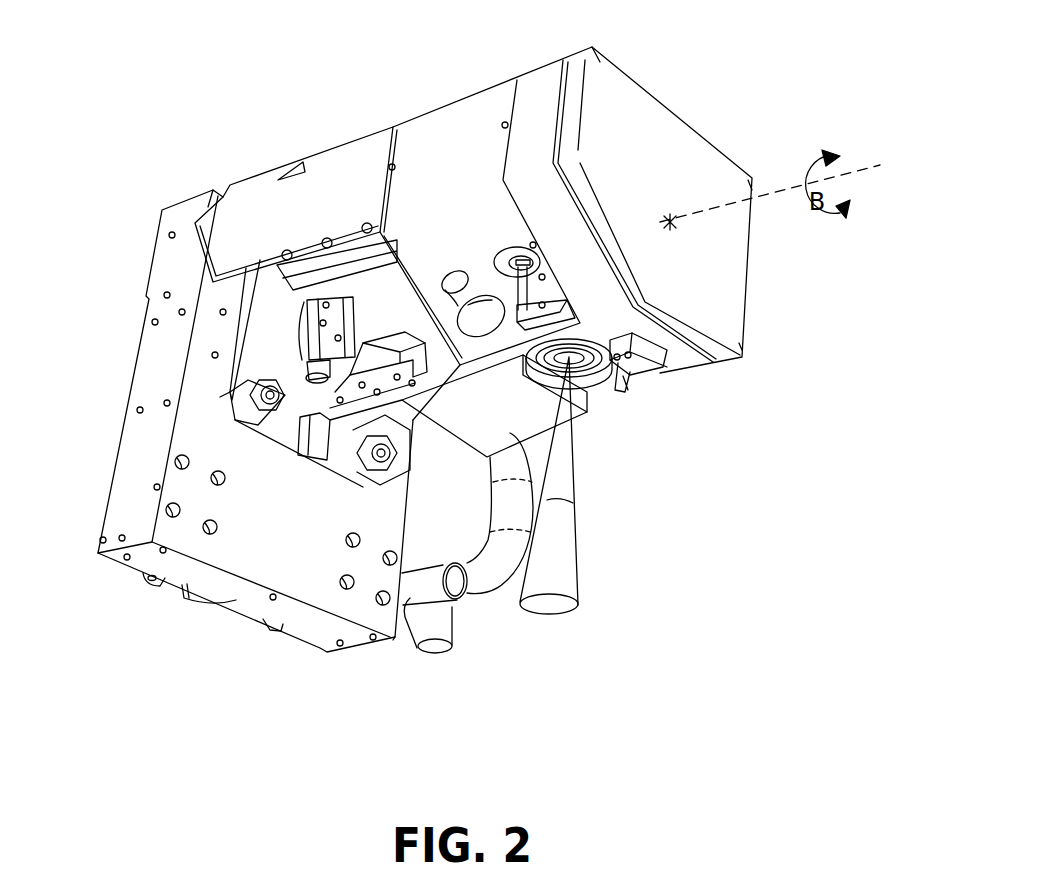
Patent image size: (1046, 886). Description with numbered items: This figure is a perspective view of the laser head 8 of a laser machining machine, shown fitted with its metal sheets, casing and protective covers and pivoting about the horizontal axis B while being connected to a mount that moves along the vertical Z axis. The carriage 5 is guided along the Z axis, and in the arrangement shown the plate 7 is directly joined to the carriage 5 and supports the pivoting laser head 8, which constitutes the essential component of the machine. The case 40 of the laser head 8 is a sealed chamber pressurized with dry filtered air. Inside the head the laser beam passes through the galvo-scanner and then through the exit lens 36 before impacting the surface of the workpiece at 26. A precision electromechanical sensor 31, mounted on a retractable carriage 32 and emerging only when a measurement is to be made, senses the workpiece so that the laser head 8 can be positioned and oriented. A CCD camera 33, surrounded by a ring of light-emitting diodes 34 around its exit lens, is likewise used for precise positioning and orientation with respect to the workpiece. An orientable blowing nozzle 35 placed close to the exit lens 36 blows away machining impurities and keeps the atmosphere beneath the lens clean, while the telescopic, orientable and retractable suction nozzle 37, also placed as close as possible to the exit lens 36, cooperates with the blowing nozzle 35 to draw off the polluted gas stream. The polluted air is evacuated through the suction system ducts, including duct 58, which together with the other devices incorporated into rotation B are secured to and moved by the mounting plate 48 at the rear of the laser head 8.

The carriage 5 is at (208, 417).
The plate 7 is at (270, 343).
The laser head 8 is at (468, 125).
The workpiece impact point 26 is at (555, 567).
The precision electromechanical sensor 31 is at (522, 257).
The retractable carriage 32 is at (540, 306).
The CCD camera 33 is at (482, 277).
The ring of light-emitting diodes 34 is at (426, 196).
The orientable blowing nozzle 35 is at (630, 386).
The exit lens 36 is at (575, 362).
The suction nozzle 37 is at (563, 363).
The case 40 is at (667, 105).
The mounting plate 48 is at (393, 127).
The duct 58 is at (487, 580).